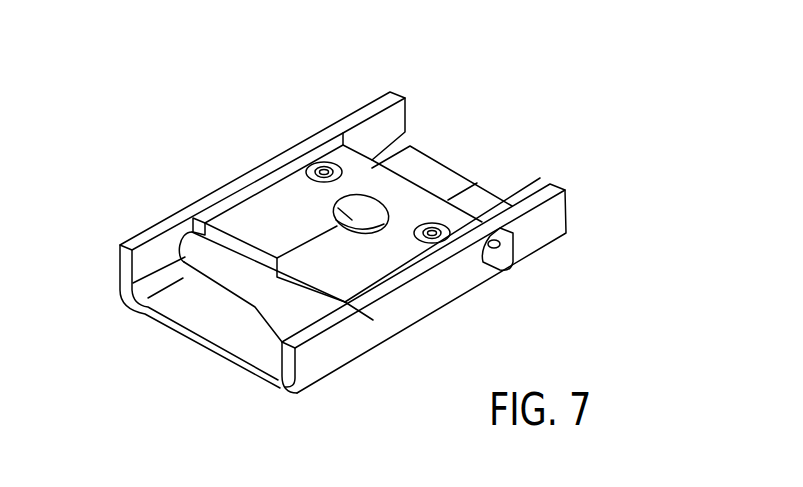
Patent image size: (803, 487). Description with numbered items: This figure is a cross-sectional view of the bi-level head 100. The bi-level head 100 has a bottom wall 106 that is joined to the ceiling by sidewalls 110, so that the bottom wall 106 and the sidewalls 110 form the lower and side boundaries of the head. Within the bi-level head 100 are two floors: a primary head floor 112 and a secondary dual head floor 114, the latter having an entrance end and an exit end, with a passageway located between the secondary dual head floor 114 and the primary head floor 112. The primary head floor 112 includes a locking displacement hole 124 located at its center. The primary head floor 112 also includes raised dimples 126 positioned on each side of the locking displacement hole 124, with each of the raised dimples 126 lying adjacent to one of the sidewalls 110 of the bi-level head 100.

The bi-level head 100 is at (314, 101).
The bottom wall 106 is at (243, 375).
The sidewalls 110 is at (541, 220).
The primary head floor 112 is at (370, 185).
The secondary dual head floor 114 is at (435, 182).
The locking displacement hole 124 is at (333, 209).
The raised dimples 126 is at (312, 164).